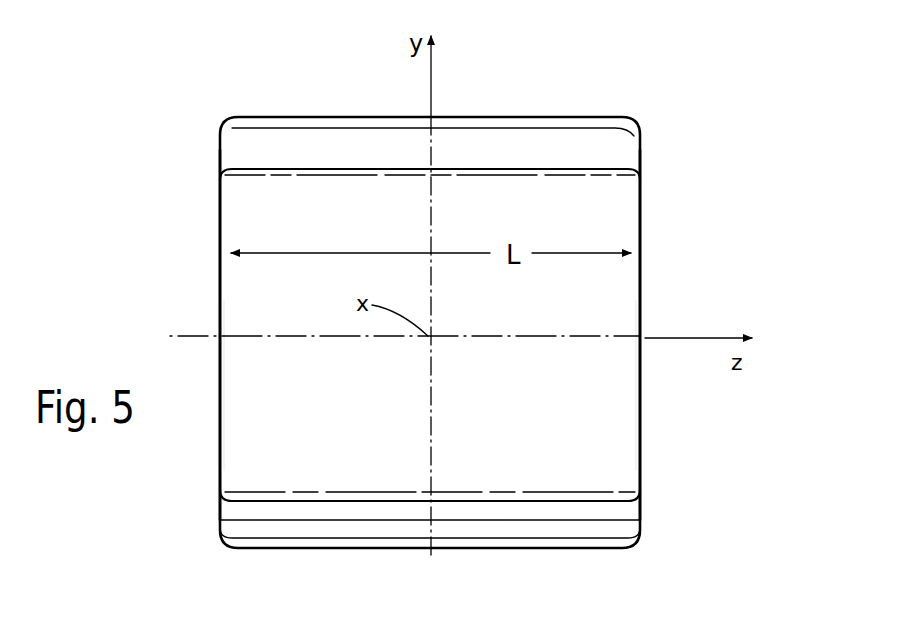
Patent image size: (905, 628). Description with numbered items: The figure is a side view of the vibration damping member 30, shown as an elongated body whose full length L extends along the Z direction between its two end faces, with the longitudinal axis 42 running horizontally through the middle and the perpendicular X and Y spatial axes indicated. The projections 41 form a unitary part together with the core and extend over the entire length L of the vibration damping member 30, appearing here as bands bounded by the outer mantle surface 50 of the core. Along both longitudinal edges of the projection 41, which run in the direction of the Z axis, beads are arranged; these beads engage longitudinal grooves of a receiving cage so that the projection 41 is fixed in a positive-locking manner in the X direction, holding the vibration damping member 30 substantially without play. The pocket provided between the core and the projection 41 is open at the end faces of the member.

The vibration damping member 30 is at (490, 332).
The outer projection 41 is at (612, 403).
The longitudinal axis 42 is at (300, 338).
The outer mantle surface 50 is at (557, 112).